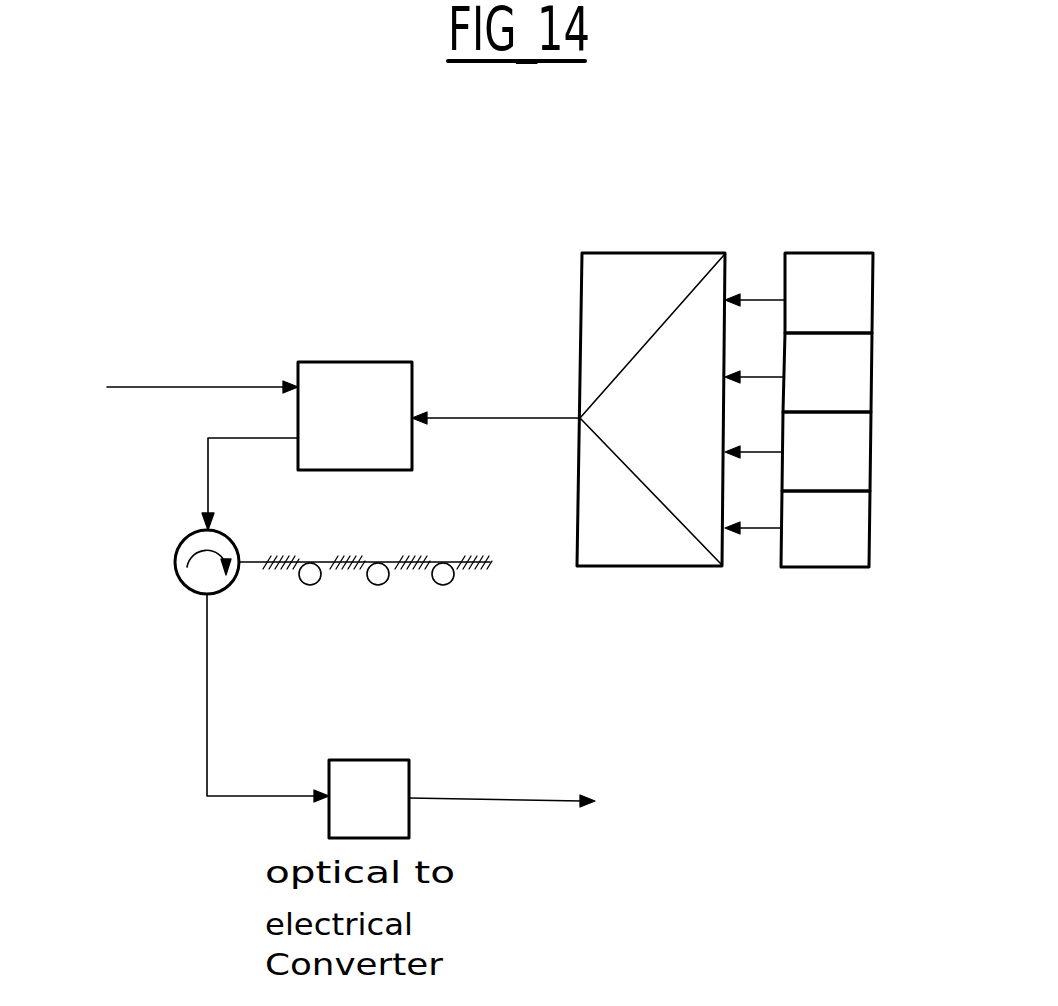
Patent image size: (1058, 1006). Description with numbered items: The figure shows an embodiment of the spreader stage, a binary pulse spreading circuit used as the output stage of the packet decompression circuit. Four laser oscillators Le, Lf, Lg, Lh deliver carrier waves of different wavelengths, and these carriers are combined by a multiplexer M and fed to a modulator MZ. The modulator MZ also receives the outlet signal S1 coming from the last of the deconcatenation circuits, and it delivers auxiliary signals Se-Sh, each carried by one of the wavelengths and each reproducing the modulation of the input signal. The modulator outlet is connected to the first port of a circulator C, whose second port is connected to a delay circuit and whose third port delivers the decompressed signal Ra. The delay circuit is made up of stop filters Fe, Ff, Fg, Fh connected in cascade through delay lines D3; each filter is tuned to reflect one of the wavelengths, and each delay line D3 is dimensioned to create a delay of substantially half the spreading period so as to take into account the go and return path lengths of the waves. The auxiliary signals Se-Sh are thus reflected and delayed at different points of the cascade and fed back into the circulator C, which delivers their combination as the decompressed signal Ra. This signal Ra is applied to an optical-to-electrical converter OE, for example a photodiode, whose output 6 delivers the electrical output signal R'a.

The multiplexer M is at (645, 251).
The modulator MZ is at (358, 361).
The laser oscillator Le is at (873, 288).
The laser oscillator Lf is at (872, 365).
The laser oscillator Lg is at (871, 455).
The laser oscillator Lh is at (870, 528).
The outlet signal S1 is at (184, 387).
The auxiliary signals Se-Sh is at (212, 418).
The circulator C is at (173, 555).
The stop filter Fe is at (280, 556).
The stop filter Ff is at (345, 556).
The stop filter Fg is at (418, 556).
The stop filter Fh is at (478, 556).
The delay line D3 is at (310, 585).
The optical-to-electrical converter OE is at (365, 760).
The converter output 6 is at (410, 770).
The decompressed signal Ra is at (272, 776).
The electrical output signal R'a is at (502, 767).